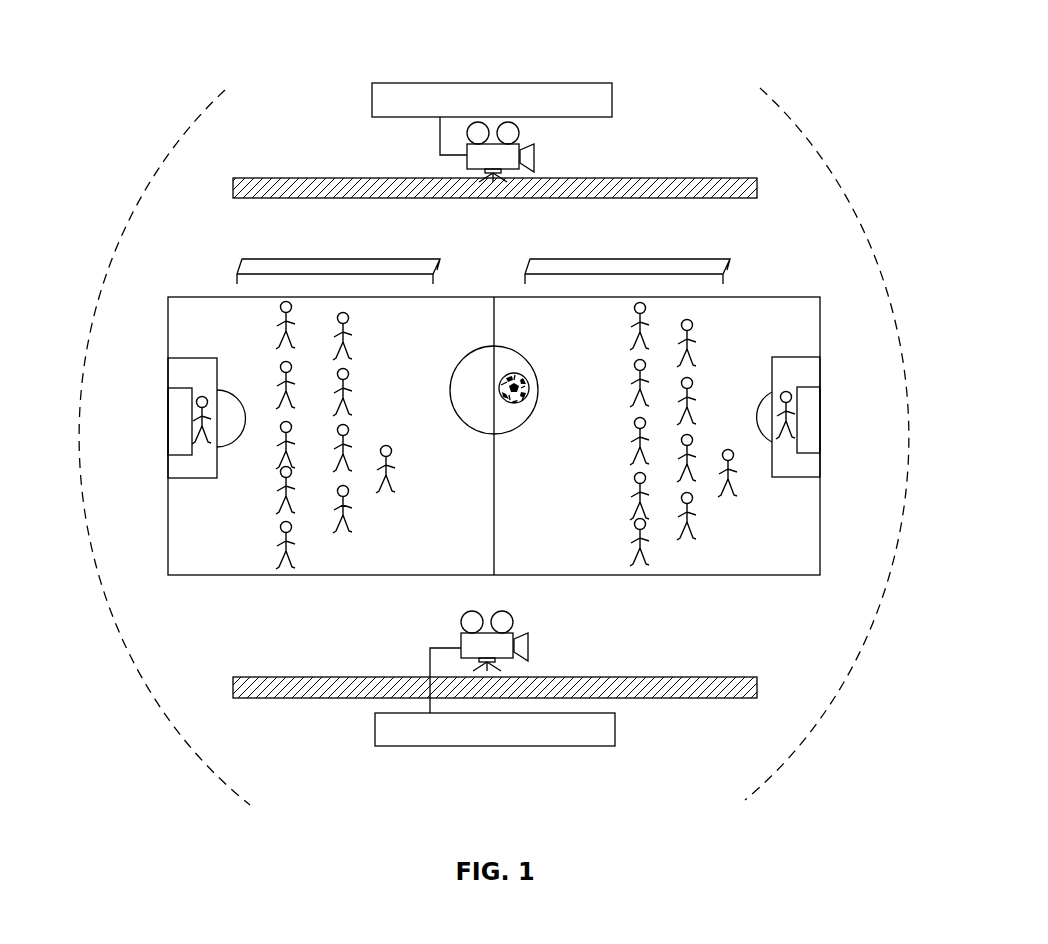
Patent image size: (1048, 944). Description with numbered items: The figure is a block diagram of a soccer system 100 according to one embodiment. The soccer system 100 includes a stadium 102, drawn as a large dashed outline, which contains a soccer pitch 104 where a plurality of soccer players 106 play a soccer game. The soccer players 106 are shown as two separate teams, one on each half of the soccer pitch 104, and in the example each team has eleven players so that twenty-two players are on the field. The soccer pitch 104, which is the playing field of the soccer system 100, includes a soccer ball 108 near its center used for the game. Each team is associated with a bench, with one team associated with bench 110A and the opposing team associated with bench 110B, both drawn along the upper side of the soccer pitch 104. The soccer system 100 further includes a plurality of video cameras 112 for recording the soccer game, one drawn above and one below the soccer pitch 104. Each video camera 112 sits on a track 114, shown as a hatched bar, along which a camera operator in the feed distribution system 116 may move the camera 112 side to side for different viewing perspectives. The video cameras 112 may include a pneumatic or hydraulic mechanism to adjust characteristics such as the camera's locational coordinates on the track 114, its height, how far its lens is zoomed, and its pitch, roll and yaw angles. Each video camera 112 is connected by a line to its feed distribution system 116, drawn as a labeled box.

The soccer system 100 is at (1024, 92).
The stadium 102 is at (906, 410).
The soccer pitch 104 is at (566, 575).
The soccer players 106 is at (360, 312).
The soccer ball 108 is at (519, 403).
The bench 110A is at (237, 252).
The bench 110B is at (527, 252).
The video camera 112 is at (540, 150).
The track 114 is at (678, 178).
The feed distribution system 116 is at (612, 102).